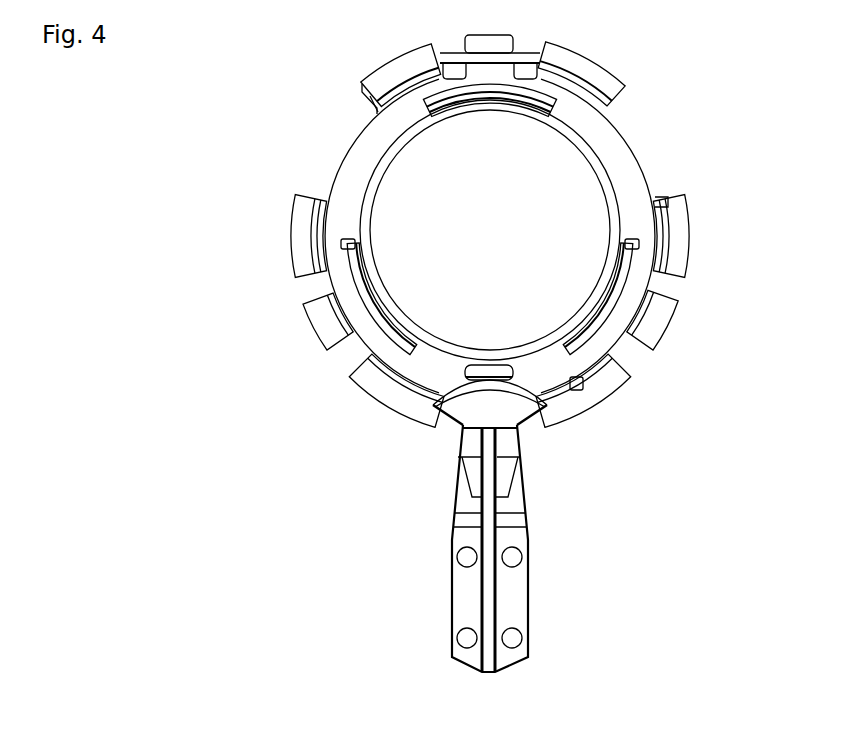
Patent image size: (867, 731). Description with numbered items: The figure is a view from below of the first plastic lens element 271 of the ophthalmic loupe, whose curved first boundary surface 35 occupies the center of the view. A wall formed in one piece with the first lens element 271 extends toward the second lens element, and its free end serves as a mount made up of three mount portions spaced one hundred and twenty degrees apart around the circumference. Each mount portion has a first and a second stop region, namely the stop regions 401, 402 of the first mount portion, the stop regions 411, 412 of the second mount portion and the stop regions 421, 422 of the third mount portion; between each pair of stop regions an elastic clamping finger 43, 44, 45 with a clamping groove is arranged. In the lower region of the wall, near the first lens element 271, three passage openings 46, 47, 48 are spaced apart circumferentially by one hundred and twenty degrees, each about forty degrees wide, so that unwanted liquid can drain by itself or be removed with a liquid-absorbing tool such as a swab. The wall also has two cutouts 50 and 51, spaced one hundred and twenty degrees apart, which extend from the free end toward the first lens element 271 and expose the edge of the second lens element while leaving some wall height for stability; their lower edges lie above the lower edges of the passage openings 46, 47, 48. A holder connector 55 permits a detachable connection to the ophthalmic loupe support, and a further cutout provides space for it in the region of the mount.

The first boundary surface 35 is at (430, 208).
The first plastic lens element 271 is at (420, 163).
The elastic clamping finger 45 is at (515, 40).
The second stop region 422 is at (393, 55).
The first stop region 421 is at (613, 72).
The cutout 51 is at (360, 93).
The passage opening 47 is at (548, 98).
The first stop region 401 is at (290, 230).
The second stop region 412 is at (688, 243).
The cutout 50 is at (668, 193).
The elastic clamping finger 43 is at (318, 335).
The elastic clamping finger 44 is at (663, 330).
The second stop region 402 is at (372, 397).
The first stop region 411 is at (590, 403).
The passage opening 48 is at (385, 330).
The passage opening 46 is at (598, 323).
The holder connector 55 is at (452, 573).